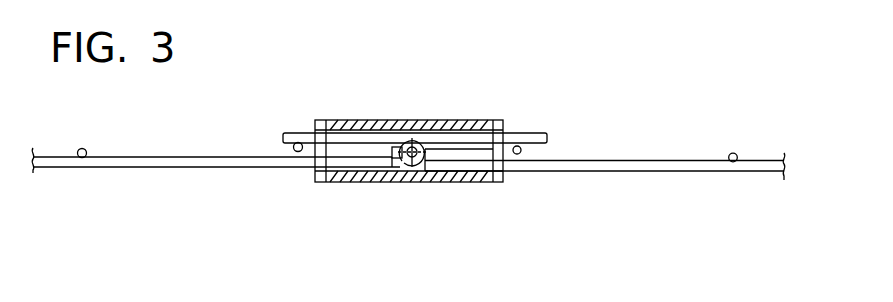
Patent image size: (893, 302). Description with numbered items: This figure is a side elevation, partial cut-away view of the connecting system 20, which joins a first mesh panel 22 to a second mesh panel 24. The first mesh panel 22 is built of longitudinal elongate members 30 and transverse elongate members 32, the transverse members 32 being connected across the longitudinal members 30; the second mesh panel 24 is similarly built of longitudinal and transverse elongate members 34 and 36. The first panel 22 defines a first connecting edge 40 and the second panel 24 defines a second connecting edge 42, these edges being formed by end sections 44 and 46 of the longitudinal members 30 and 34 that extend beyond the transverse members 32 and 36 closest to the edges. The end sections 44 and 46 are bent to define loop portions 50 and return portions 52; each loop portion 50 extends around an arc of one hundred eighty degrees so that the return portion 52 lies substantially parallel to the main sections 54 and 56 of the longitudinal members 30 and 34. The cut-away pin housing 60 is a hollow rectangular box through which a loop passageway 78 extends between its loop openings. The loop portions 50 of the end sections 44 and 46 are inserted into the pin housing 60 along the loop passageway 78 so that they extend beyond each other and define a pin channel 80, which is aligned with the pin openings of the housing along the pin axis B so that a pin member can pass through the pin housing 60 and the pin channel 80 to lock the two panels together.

The connecting system 20 is at (443, 72).
The first mesh panel 22 is at (600, 144).
The second mesh panel 24 is at (212, 143).
The longitudinal elongate members 30 is at (628, 165).
The transverse elongate members 32 is at (521, 147).
The longitudinal elongate members 34 is at (132, 163).
The transverse elongate members 36 is at (90, 151).
The first connecting edge 40 is at (459, 101).
The second connecting edge 42 is at (358, 102).
The end sections 44 is at (475, 124).
The end sections 46 is at (343, 124).
The loop portions 50 is at (380, 150).
The return portions 52 is at (333, 156).
The main section 54 is at (602, 180).
The main section 56 is at (215, 181).
The pin housing 60 is at (340, 179).
The loop passageway 78 is at (475, 152).
The pin channel 80 is at (400, 162).
The pin axis B is at (412, 165).